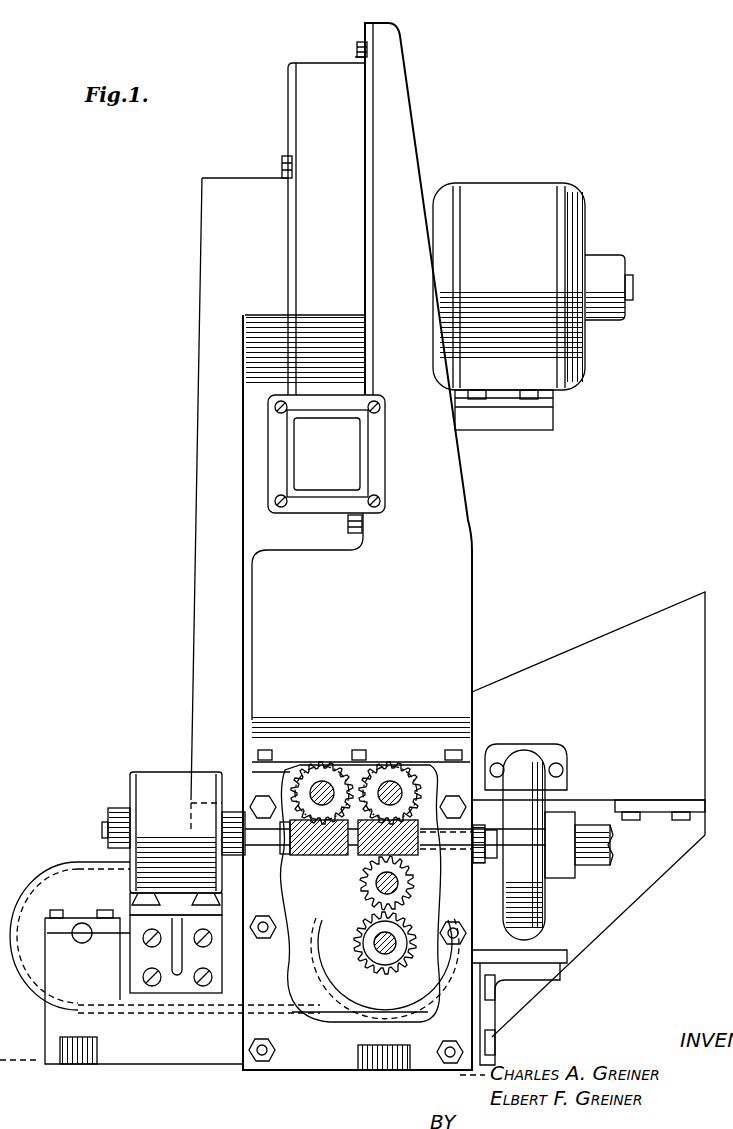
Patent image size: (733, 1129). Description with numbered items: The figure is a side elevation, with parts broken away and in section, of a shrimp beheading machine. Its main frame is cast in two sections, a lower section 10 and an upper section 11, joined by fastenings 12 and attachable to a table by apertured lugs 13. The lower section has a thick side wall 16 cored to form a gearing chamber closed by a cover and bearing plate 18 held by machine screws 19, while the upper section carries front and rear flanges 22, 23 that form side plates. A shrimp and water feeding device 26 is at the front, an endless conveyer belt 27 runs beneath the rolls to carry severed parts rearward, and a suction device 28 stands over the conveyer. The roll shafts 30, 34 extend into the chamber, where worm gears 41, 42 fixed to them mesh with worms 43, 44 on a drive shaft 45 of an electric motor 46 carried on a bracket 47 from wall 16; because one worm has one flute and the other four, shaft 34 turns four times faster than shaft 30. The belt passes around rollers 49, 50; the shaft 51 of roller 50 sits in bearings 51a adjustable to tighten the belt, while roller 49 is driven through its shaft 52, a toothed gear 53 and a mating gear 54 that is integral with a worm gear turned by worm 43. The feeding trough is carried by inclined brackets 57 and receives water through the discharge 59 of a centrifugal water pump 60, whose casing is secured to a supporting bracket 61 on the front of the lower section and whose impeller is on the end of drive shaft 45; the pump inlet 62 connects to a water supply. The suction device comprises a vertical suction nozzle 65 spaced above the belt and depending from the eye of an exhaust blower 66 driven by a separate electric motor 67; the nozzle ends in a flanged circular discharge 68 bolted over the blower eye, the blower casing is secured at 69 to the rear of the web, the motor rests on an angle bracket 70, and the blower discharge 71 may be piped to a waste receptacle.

The lower frame section 10 is at (217, 1050).
The upper frame section 11 is at (468, 540).
The fastenings 12 is at (266, 750).
The apertured lugs 13 is at (78, 1063).
The side wall 16 is at (68, 1016).
The cover and bearing plate 18 is at (332, 1052).
The machine screws 19 is at (466, 807).
The front flange 22 is at (474, 598).
The rear flange 23 is at (282, 565).
The shrimp and water feeding device 26 is at (638, 632).
The endless conveyer belt 27 is at (110, 862).
The suction device 28 is at (212, 580).
The shaft 30 is at (391, 785).
The shaft 34 is at (321, 785).
The worm gear 41 is at (402, 812).
The worm gear 42 is at (295, 790).
The worm 43 is at (410, 847).
The worm 44 is at (320, 856).
The drive shaft 45 is at (280, 852).
The electric motor 46 is at (162, 790).
The bracket 47 is at (160, 946).
The roller 49 is at (302, 969).
The roller 50 is at (52, 878).
The shaft 51 is at (80, 941).
The bearings 51a is at (82, 922).
The shaft 52 is at (372, 946).
The toothed gear 53 is at (402, 962).
The gear 54 is at (368, 892).
The inclined brackets 57 is at (640, 872).
The pump discharge 59 is at (522, 776).
The centrifugal water pump 60 is at (530, 822).
The supporting bracket 61 is at (562, 962).
The pump inlet 62 is at (566, 852).
The suction nozzle 65 is at (190, 706).
The exhaust fan or blower 66 is at (325, 103).
The electric motor 67 is at (505, 205).
The flanged circular discharge 68 is at (225, 207).
The securing means 69 is at (357, 49).
The angle bracket 70 is at (552, 419).
The blower discharge 71 is at (345, 443).